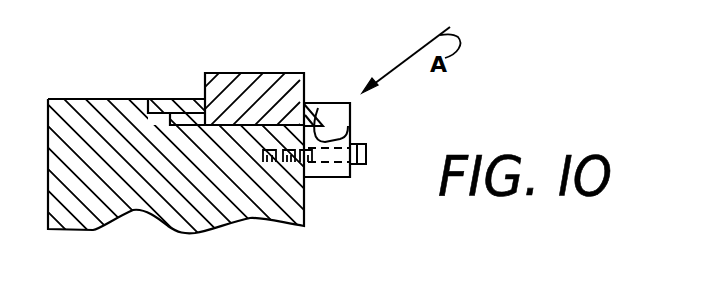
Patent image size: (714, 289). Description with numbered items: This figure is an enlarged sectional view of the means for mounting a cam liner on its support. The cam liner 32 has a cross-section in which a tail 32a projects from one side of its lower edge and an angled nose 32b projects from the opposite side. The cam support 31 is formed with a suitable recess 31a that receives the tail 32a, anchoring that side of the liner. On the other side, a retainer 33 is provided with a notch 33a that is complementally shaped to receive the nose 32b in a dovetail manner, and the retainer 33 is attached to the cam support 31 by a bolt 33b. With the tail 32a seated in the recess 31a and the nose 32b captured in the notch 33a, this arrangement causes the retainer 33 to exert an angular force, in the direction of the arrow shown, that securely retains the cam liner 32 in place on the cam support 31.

The cam support 31 is at (298, 203).
The recess 31a is at (195, 127).
The cam liner 32 is at (258, 84).
The tail 32a is at (148, 100).
The angled nose 32b is at (307, 99).
The retainer 33 is at (350, 120).
The notch 33a is at (351, 137).
The bolt 33b is at (366, 153).